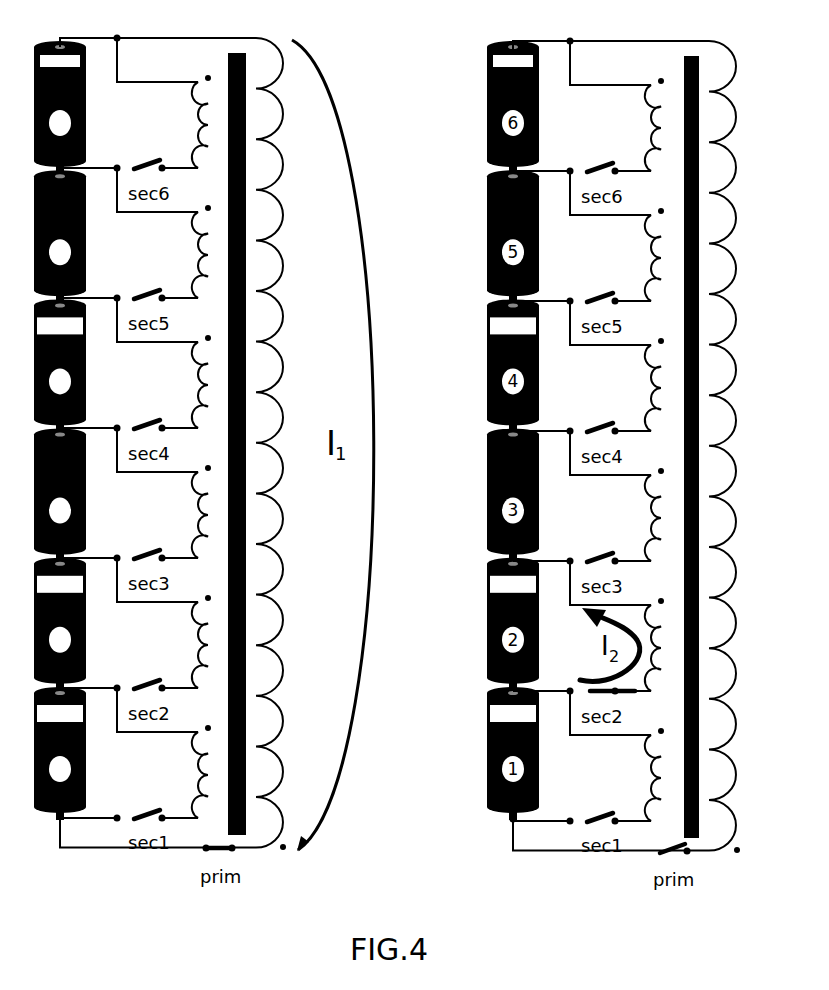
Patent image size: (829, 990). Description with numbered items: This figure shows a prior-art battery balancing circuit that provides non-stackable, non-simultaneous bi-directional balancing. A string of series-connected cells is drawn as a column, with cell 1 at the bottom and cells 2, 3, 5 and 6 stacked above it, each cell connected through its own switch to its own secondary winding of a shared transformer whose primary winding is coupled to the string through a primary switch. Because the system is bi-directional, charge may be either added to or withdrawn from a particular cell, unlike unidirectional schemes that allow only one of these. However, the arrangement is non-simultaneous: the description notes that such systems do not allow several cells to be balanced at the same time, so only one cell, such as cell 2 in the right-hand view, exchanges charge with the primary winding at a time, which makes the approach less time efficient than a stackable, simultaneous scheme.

The battery cell 1 is at (60, 753).
The battery cell 2 is at (60, 624).
The battery cell 3 is at (60, 495).
The battery cell 5 is at (60, 236).
The battery cell 6 is at (60, 107).